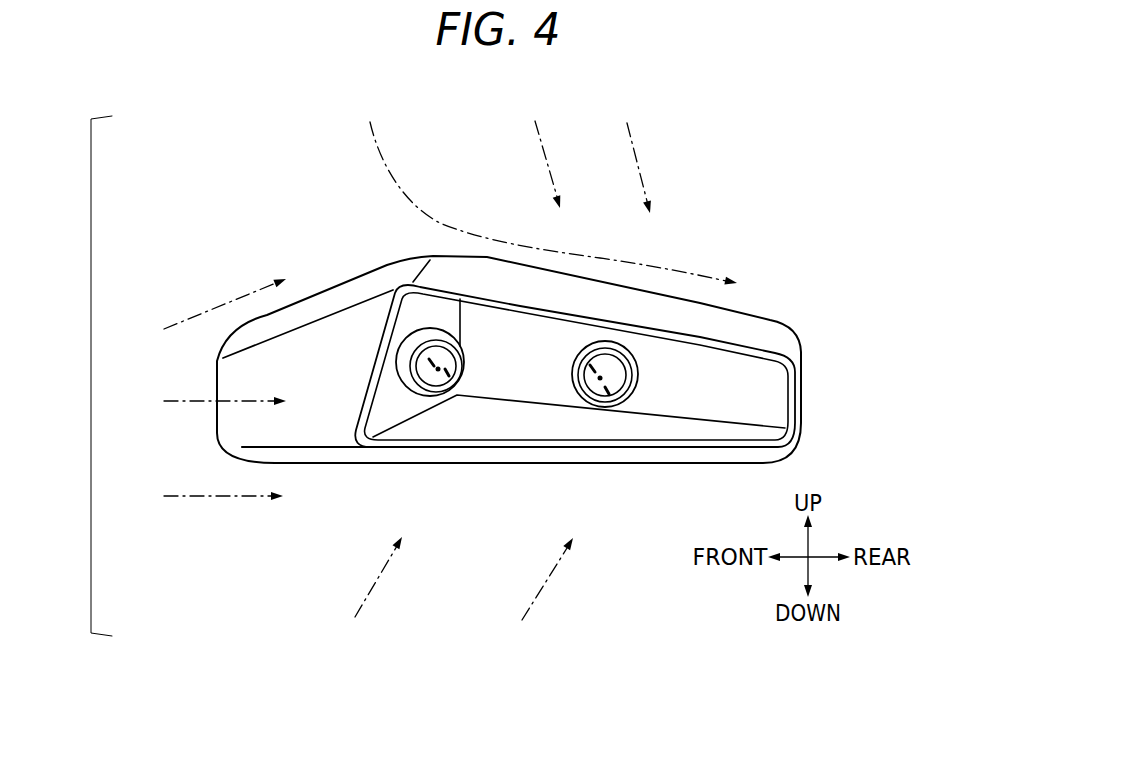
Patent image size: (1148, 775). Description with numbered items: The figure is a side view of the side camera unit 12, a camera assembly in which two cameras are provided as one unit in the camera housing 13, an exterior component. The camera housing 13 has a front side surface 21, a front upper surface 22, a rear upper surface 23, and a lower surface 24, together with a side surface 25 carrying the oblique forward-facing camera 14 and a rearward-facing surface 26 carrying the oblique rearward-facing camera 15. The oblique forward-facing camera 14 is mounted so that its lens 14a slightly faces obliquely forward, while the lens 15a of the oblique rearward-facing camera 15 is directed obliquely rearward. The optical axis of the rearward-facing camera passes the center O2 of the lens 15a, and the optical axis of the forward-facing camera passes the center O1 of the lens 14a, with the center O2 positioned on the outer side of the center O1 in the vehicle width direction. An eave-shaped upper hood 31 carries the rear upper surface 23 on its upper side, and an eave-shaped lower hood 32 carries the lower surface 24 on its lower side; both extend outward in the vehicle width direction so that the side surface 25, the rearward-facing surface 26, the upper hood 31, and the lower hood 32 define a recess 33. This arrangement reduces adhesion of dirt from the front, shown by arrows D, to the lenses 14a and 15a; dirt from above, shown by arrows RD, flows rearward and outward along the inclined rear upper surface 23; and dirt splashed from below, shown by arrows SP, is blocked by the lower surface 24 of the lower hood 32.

The side camera unit 12 is at (466, 198).
The camera housing 13 is at (623, 283).
The oblique forward-facing camera 14 is at (629, 434).
The lens 14a is at (592, 401).
The oblique rearward-facing camera 15 is at (435, 420).
The lens 15a is at (431, 388).
The front side surface 21 is at (304, 416).
The front upper surface 22 is at (318, 308).
The rear upper surface 23 is at (683, 317).
The lower surface 24 is at (527, 463).
The side surface 25 is at (687, 404).
The rearward-facing surface 26 is at (403, 320).
The upper hood 31 is at (585, 305).
The lower hood 32 is at (481, 462).
The recess 33 is at (527, 333).
The center of the lens of the oblique forward-facing camera O1 is at (601, 378).
The center of the lens of the oblique rearward-facing camera O2 is at (440, 368).
The arrows indicating dirt from the upper side RD is at (546, 189).
The arrows indicating dirt from the lower side SP is at (457, 595).
The arrows indicating dirt from the front side D is at (213, 395).